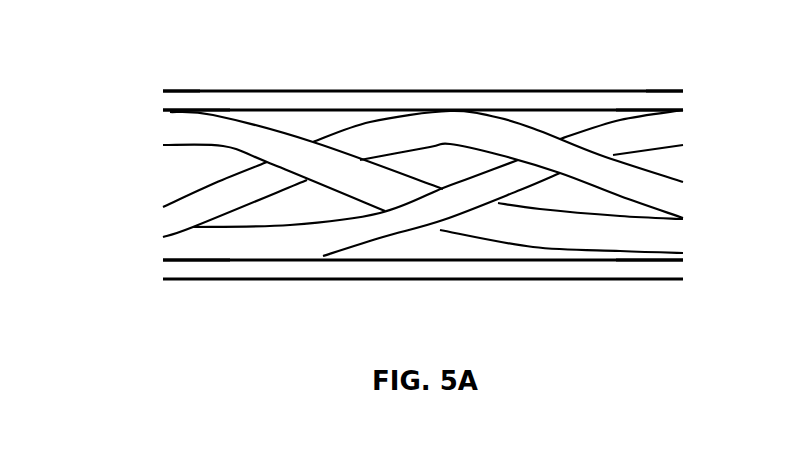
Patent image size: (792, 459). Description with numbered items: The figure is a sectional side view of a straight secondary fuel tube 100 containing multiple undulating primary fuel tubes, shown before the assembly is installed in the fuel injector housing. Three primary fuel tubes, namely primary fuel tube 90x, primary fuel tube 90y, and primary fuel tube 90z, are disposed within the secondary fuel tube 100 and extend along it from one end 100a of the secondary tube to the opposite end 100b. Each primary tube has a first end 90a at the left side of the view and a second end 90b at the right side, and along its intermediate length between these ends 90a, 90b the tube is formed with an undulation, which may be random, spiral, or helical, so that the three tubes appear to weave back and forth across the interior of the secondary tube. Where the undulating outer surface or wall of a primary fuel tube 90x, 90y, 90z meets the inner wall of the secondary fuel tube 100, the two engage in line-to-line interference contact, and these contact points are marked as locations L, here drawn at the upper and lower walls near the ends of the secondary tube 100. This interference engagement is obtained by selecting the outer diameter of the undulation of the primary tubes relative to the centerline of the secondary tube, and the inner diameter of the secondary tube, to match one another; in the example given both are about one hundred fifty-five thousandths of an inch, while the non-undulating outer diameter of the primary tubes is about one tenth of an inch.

The secondary fuel tube 100 is at (333, 91).
The first end of secondary fuel tube 100a is at (175, 90).
The second end of secondary fuel tube 100b is at (660, 90).
The locations of line-to-line interference contact L is at (209, 108).
The first ends of primary fuel tubes 90a is at (162, 128).
The second ends of primary fuel tubes 90b is at (678, 130).
The primary fuel tube 90x is at (483, 125).
The primary fuel tube 90y is at (257, 242).
The primary fuel tube 90z is at (538, 232).